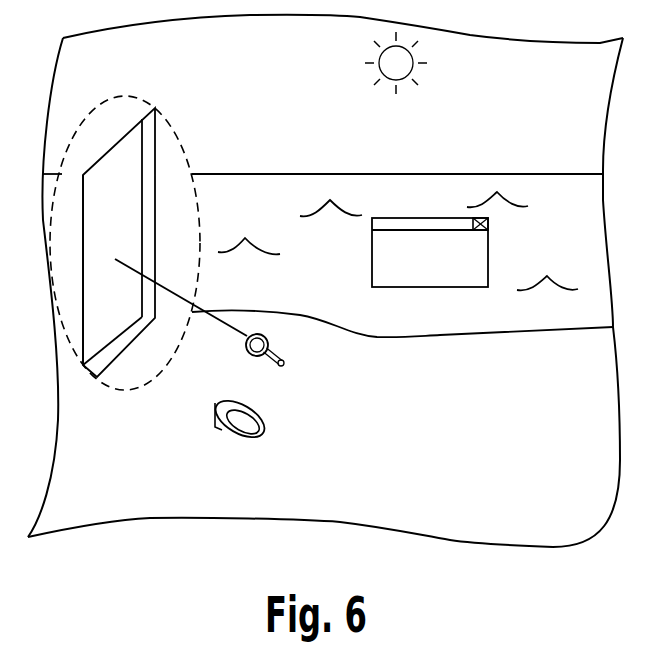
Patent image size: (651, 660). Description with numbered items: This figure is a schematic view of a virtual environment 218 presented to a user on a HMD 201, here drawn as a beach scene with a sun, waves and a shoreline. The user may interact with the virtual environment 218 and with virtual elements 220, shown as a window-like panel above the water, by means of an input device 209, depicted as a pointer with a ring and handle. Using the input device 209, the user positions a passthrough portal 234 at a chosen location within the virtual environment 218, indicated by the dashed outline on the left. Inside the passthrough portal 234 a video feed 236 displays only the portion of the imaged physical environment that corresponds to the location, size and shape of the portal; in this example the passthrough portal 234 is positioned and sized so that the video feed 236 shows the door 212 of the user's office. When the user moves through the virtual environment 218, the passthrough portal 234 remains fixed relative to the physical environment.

The HMD 201 is at (265, 430).
The input device 209 is at (284, 362).
The door 212 is at (146, 224).
The virtual environment 218 is at (553, 516).
The virtual elements 220 is at (423, 218).
The passthrough portal 234 is at (143, 98).
The video feed 236 is at (170, 153).